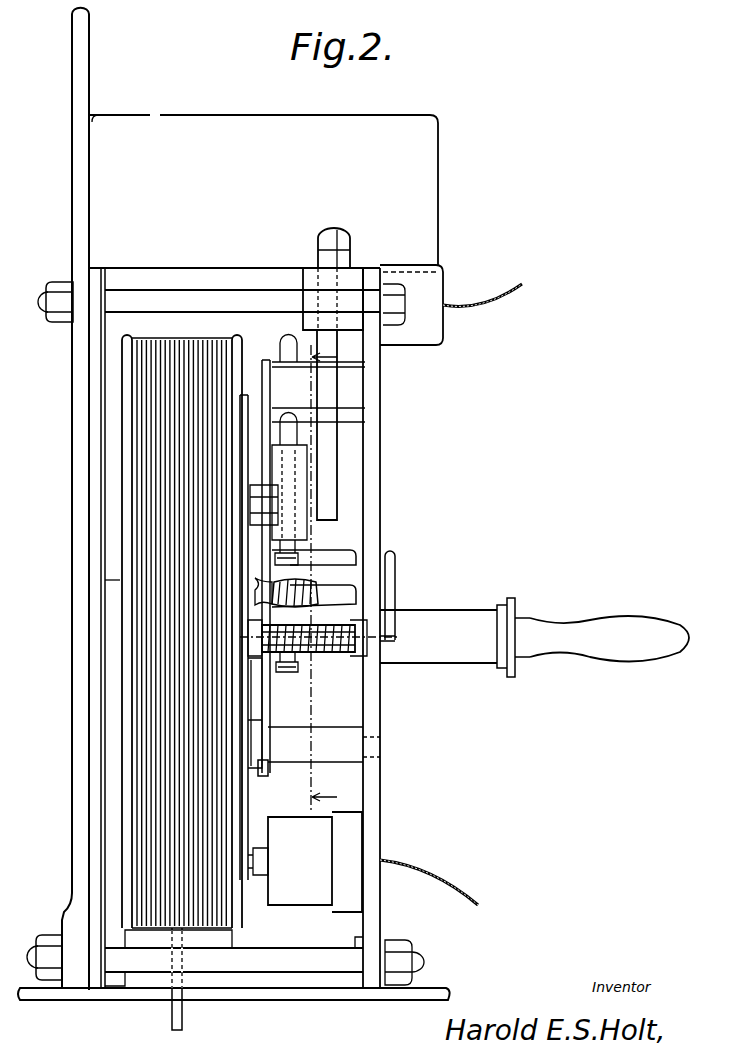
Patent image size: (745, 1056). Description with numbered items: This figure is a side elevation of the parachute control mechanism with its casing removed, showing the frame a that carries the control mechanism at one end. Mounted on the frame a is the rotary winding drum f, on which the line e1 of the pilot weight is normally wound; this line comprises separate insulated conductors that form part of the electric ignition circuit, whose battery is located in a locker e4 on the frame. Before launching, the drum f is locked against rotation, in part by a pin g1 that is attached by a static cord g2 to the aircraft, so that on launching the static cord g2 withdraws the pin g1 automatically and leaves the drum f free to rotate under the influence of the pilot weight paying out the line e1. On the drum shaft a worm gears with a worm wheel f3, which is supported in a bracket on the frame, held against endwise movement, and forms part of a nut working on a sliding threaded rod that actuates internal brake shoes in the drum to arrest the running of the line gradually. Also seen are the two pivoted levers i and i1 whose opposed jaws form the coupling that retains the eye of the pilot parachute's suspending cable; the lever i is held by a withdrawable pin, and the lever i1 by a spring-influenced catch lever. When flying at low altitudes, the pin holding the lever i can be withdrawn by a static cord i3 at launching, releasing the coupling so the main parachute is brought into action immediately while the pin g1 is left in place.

The frame a is at (82, 90).
The locker e4 is at (263, 190).
The lever i is at (350, 244).
The lever i1 is at (318, 257).
The static cord i3 is at (480, 300).
The rotary drum f is at (145, 452).
The worm wheel f3 is at (300, 592).
The pin g1 is at (310, 906).
The static cord g2 is at (444, 872).
The line e1 is at (172, 1010).